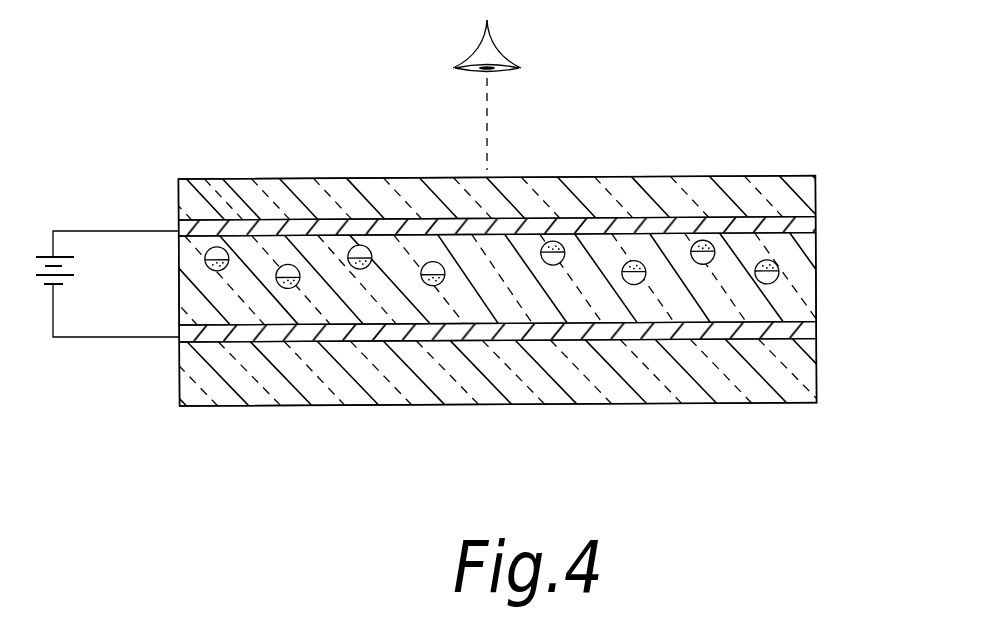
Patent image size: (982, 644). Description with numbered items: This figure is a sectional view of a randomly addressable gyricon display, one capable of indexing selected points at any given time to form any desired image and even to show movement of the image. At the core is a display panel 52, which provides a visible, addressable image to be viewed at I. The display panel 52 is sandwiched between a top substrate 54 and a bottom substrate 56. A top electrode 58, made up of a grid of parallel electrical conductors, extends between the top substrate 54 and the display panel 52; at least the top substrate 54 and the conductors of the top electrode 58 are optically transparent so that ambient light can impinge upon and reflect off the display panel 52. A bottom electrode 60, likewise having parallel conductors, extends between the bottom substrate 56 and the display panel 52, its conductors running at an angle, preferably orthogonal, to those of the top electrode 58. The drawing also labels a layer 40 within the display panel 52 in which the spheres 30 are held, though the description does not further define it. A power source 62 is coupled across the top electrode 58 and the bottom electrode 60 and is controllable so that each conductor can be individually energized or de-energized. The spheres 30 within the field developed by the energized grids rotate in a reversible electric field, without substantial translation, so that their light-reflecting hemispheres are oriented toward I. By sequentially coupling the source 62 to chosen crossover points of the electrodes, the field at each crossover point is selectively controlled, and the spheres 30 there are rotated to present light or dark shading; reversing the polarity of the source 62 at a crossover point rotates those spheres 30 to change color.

The viewing location I is at (500, 52).
The spheres 30 is at (634, 264).
The elastomer layer 40 is at (813, 258).
The display panel 52 is at (176, 292).
The top substrate 54 is at (778, 183).
The bottom substrate 56 is at (805, 380).
The top electrode 58 is at (330, 227).
The bottom electrode 60 is at (812, 331).
The power source 62 is at (38, 250).